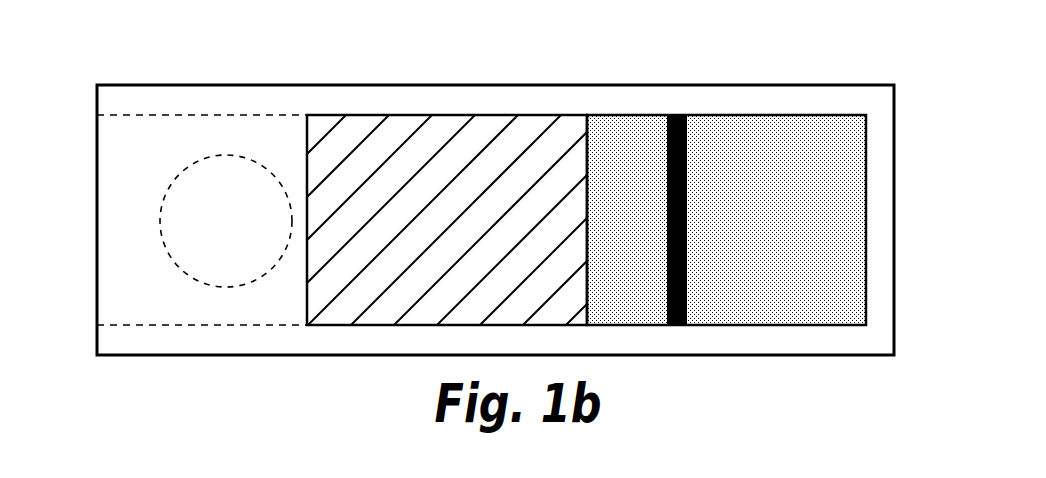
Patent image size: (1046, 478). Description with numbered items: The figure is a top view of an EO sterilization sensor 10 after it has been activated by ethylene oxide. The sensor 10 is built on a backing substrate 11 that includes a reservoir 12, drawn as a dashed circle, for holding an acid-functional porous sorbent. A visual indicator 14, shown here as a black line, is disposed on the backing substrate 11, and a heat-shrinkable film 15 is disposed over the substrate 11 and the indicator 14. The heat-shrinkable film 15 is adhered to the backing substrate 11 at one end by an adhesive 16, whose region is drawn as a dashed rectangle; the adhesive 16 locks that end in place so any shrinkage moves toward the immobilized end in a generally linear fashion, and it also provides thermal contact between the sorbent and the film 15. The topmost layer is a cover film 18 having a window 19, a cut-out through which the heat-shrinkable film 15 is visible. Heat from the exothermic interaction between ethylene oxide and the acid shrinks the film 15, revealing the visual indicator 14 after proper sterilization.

The EO sterilization sensor 10 is at (852, 52).
The backing substrate 11 is at (840, 225).
The reservoir 12 is at (238, 287).
The visual indicator 14 is at (677, 125).
The heat-shrinkable film 15 is at (527, 127).
The adhesive 16 is at (212, 114).
The cover film 18 is at (783, 97).
The window 19 is at (410, 114).